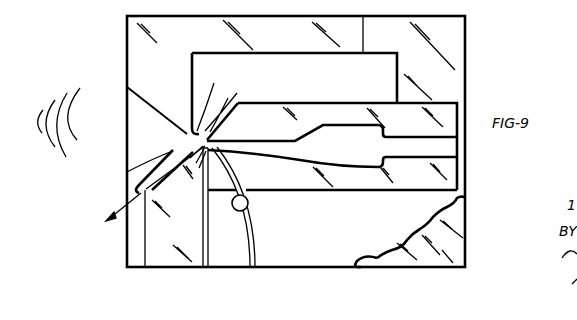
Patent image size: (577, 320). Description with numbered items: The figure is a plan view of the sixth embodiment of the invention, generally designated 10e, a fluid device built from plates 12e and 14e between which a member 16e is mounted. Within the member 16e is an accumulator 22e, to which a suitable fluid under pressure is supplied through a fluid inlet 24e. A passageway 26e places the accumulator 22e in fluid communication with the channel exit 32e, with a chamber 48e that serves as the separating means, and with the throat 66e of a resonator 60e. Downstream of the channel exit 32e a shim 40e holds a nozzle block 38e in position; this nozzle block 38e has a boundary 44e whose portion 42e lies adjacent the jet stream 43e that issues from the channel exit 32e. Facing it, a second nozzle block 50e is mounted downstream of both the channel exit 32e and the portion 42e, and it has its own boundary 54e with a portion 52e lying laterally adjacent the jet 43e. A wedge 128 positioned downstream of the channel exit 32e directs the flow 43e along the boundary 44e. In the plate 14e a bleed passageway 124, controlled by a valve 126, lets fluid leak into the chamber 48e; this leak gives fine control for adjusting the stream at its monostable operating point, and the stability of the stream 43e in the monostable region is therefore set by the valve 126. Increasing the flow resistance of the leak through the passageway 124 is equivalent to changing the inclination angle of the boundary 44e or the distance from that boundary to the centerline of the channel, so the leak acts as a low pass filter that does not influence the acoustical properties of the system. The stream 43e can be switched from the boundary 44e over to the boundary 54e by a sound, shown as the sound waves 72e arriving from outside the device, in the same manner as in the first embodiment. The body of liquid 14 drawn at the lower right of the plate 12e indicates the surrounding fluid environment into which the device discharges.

The sixth embodiment 10e is at (480, 198).
The plate 12e is at (358, 266).
The liquid body 14 is at (456, 246).
The plate 14e is at (137, 265).
The member 16e is at (449, 118).
The accumulator 22e is at (355, 155).
The fluid inlet 24e is at (447, 147).
The passageway 26e is at (268, 134).
The channel exit 32e is at (236, 124).
The nozzle block 38e is at (176, 245).
The shim 40e is at (204, 268).
The portion of boundary 42e is at (172, 178).
The jet stream 43e is at (106, 221).
The boundary 44e is at (142, 192).
The chamber 48e is at (226, 152).
The second nozzle block 50e is at (180, 97).
The portion of boundary 52e is at (213, 98).
The boundary 54e is at (137, 96).
The resonator 60e is at (345, 91).
The throat 66e is at (234, 102).
The sound waves 72e is at (80, 128).
The bleed passageway 124 is at (251, 262).
The valve 126 is at (248, 203).
The wedge 128 is at (158, 151).